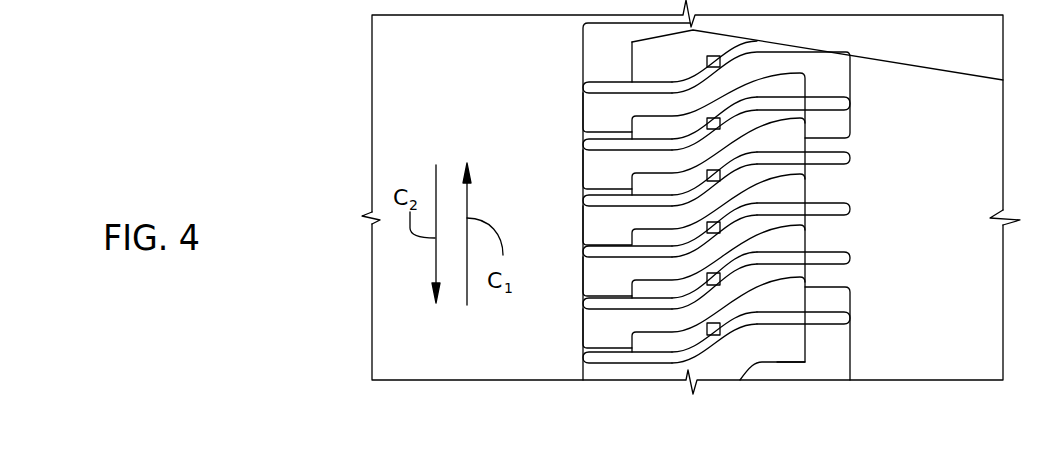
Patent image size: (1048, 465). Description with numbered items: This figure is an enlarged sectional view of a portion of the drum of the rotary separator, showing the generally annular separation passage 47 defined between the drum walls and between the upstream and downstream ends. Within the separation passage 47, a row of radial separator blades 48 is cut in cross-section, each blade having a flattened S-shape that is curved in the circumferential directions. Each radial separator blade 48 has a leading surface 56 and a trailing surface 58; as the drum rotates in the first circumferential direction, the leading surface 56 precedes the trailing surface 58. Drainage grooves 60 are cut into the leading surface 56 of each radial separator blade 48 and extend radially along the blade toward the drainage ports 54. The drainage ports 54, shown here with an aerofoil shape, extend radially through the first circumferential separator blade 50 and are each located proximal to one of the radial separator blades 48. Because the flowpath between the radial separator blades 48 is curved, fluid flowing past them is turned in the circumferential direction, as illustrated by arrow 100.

The separation passage 47 is at (361, 252).
The radial separator blades 48 is at (598, 89).
The first circumferential separator blade 50 is at (672, 71).
The drainage ports 54 is at (760, 145).
The leading surface 56 is at (830, 92).
The trailing surface 58 is at (835, 72).
The drainage grooves 60 is at (582, 342).
The arrow 100 is at (748, 178).